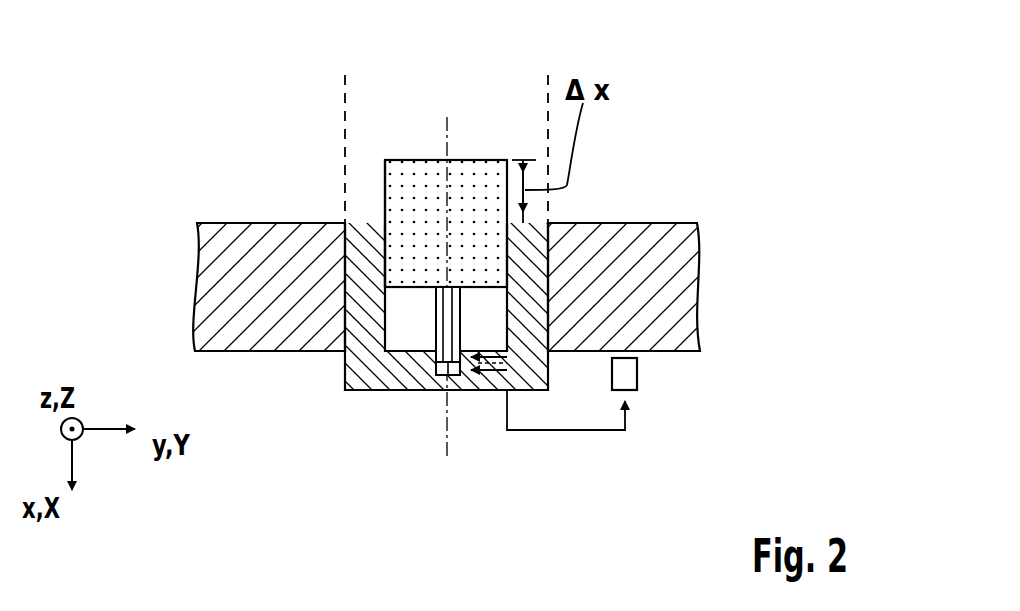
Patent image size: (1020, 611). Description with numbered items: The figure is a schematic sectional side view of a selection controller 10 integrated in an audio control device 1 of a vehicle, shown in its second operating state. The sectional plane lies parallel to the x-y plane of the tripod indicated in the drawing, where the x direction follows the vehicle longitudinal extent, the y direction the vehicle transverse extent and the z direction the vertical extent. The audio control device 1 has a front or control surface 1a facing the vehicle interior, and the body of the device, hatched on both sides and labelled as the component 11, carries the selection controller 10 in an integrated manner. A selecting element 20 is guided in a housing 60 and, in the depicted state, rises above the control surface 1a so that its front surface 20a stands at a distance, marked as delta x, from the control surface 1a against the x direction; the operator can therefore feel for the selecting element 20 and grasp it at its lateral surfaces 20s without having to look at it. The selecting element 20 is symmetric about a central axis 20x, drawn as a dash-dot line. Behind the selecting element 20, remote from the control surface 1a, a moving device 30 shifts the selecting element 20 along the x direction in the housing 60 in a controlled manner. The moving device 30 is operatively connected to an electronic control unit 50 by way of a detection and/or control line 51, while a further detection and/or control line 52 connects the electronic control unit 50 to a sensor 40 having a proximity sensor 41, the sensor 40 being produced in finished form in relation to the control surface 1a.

The audio control device 1 is at (168, 170).
The control surface 1a is at (602, 212).
The selection controller 10 is at (548, 75).
The plate / component 11 is at (272, 240).
The selecting element 20 is at (450, 267).
The front surface 20a is at (478, 157).
The lateral surfaces 20s is at (385, 200).
The central axis of sensor body 20x is at (445, 156).
The moving device 30 is at (438, 331).
The sensor 40 is at (418, 409).
The proximity sensor 41 is at (446, 373).
The electronic control unit 50 is at (637, 375).
The detection and/or control line 51 is at (497, 372).
The further detection and/or control line 52 is at (480, 360).
The housing 60 is at (362, 243).